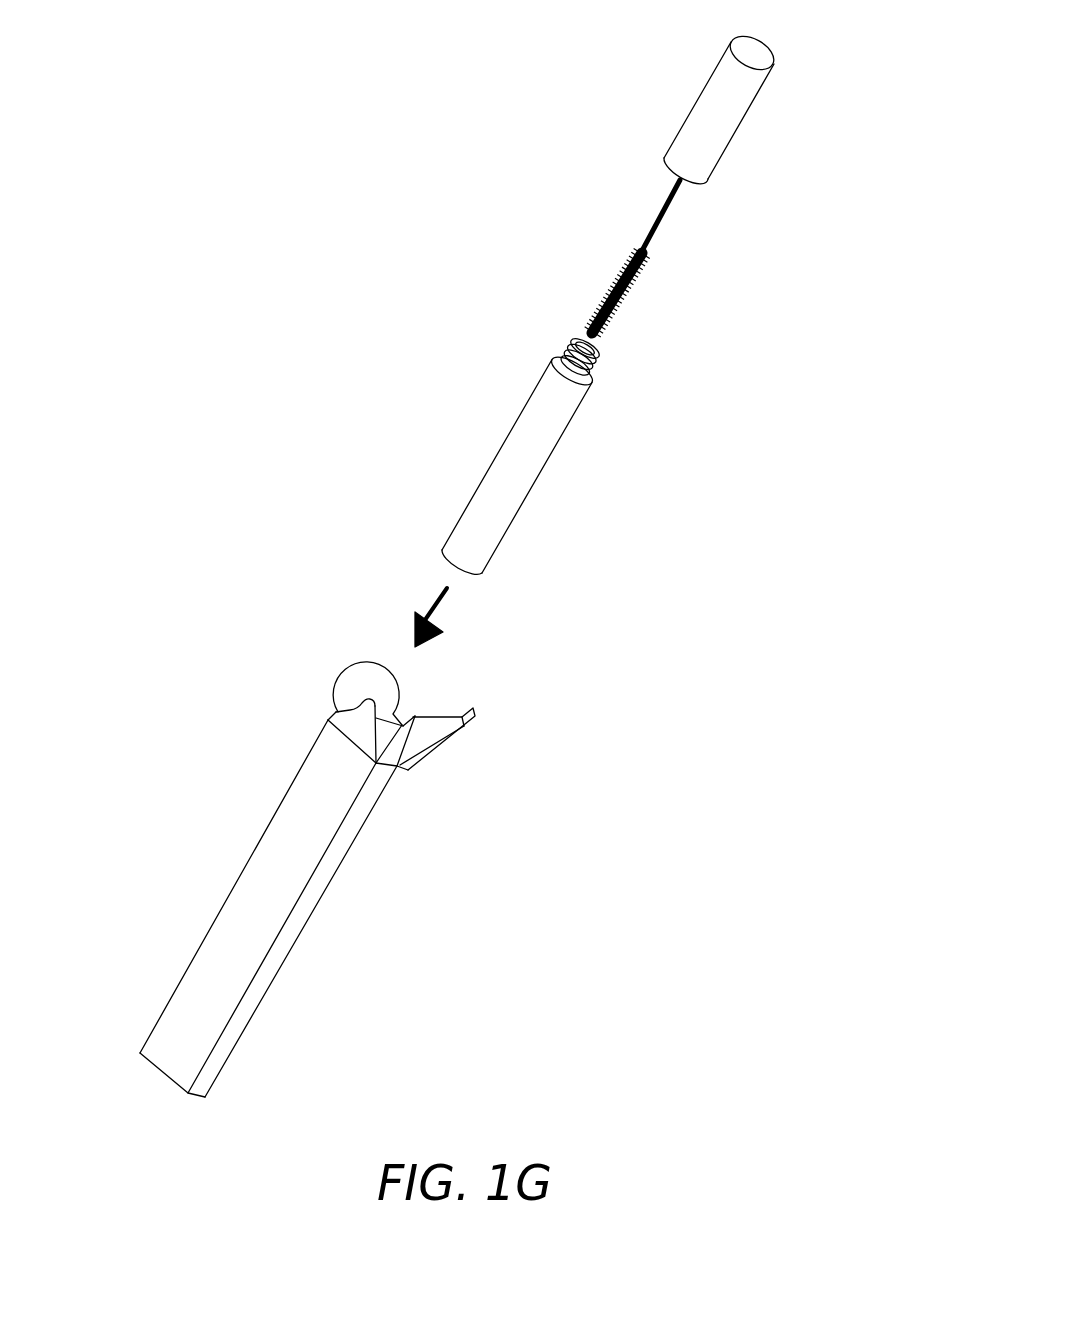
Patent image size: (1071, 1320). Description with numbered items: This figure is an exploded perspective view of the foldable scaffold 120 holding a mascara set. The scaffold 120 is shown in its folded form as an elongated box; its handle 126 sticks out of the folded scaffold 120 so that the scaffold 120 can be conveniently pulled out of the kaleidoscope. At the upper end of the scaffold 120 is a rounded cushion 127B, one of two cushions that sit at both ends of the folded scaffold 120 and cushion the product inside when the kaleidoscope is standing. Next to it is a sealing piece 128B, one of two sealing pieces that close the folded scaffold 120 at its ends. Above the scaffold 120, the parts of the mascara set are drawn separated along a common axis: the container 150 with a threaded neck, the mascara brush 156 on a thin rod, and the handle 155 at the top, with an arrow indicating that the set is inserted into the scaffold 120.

The scaffold 120 is at (253, 852).
The handle 126 is at (355, 717).
The cushion 127B is at (370, 675).
The sealing piece 128B is at (438, 735).
The container 150 is at (497, 455).
The handle 155 is at (695, 108).
The mascara brush 156 is at (617, 277).